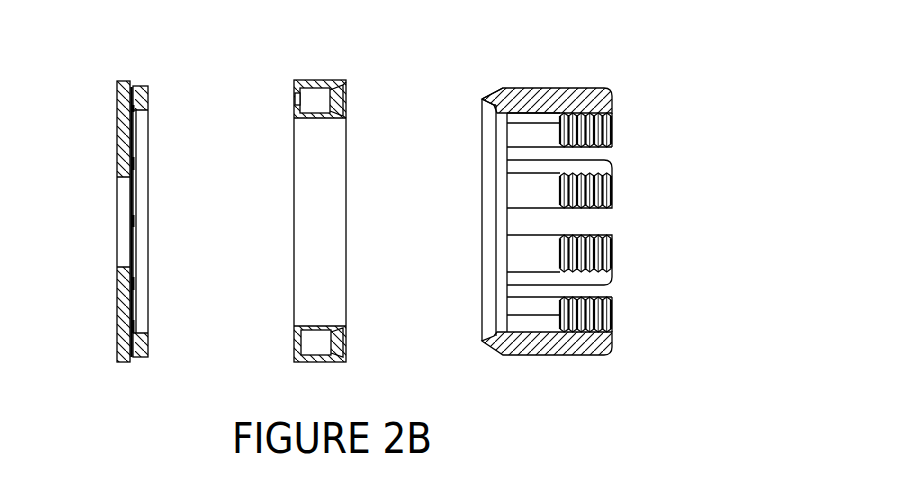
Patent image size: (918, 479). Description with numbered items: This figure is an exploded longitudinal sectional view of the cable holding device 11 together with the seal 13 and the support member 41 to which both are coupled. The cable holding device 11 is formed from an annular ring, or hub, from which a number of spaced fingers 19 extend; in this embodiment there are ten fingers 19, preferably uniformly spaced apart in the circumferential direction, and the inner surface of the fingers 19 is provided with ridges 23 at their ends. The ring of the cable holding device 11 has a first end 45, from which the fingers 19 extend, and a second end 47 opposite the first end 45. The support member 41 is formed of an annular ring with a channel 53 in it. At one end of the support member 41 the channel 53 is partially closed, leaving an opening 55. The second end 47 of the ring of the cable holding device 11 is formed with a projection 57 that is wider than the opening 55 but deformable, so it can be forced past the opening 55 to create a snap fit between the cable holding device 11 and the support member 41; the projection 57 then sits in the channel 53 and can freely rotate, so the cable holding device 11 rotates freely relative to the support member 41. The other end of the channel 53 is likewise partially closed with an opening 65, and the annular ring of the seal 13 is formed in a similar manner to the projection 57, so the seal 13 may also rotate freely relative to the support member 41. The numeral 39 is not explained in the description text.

The cable holding device 11 is at (601, 35).
The seal 13 is at (118, 123).
The fingers 19 is at (602, 186).
The ridges 23 is at (600, 317).
The bottom flange 39 is at (553, 357).
The support member 41 is at (320, 360).
The first end 45 is at (522, 110).
The second end 47 is at (482, 223).
The channel 53 is at (301, 98).
The opening 55 is at (341, 99).
The projection 57 is at (484, 98).
The opening 65 is at (297, 100).